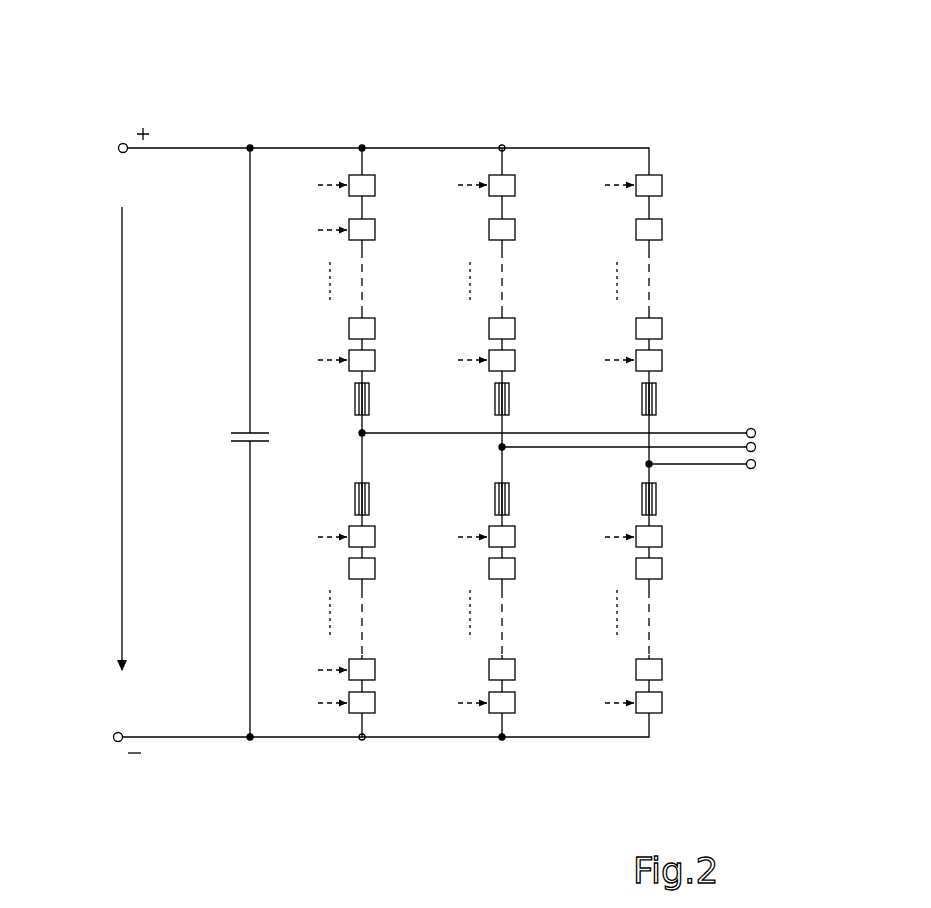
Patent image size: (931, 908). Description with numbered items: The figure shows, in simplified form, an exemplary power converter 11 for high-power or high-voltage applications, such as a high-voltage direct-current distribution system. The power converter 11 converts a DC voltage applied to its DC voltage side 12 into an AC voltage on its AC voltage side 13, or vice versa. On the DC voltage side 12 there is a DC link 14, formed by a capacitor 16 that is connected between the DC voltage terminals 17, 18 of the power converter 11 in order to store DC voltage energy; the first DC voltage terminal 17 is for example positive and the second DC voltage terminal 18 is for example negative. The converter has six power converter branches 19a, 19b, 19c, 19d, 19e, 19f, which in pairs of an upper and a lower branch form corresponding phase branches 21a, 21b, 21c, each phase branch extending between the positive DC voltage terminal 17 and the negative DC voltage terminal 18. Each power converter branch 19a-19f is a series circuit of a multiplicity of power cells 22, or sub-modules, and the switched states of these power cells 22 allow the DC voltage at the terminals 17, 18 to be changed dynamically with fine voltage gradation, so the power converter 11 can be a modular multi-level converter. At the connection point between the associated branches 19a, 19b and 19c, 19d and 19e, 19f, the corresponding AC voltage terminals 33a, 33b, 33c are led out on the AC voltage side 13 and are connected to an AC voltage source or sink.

The power converter 11 is at (98, 106).
The DC voltage side 12 is at (96, 229).
The AC voltage side 13 is at (604, 396).
The DC link 14 is at (228, 392).
The capacitor 16 is at (240, 430).
The DC voltage terminal 17 is at (119, 146).
The DC voltage terminal 18 is at (114, 739).
The power converter branch 19a is at (358, 168).
The power converter branch 19b is at (356, 720).
The power converter branch 19c is at (500, 168).
The power converter branch 19d is at (497, 720).
The power converter branch 19e is at (646, 166).
The power converter branch 19f is at (645, 722).
The phase branch 21a is at (380, 426).
The phase branch 21b is at (526, 421).
The phase branch 21c is at (690, 449).
The power cell 22 is at (348, 232).
The AC voltage terminal 33a is at (757, 430).
The AC voltage terminal 33b is at (757, 446).
The AC voltage terminal 33c is at (757, 466).